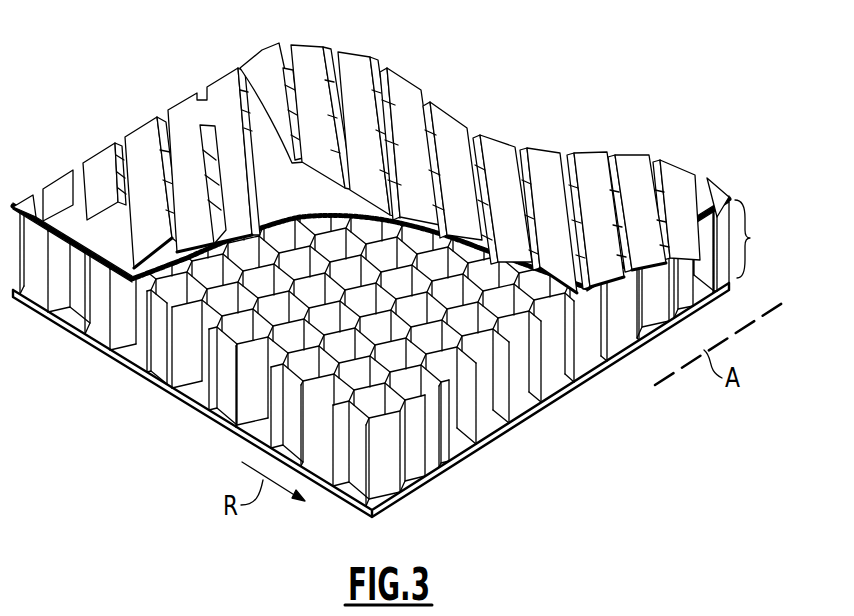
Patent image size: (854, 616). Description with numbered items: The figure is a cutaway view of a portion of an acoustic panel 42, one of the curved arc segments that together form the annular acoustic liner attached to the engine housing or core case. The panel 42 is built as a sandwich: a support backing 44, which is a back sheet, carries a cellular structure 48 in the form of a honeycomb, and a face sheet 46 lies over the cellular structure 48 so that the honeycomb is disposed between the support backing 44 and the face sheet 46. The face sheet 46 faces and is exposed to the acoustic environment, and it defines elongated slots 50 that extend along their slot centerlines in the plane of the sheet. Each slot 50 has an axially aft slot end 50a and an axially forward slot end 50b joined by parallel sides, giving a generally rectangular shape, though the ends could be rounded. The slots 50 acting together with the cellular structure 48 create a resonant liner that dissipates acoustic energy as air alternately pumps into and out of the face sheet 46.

The acoustic panel 42 is at (416, 258).
The support backing 44 is at (514, 424).
The face sheet 46 is at (495, 155).
The cellular structure 48 is at (752, 238).
The elongated slots 50 is at (371, 198).
The axially aft slot end 50a is at (196, 100).
The axially forward slot end 50b is at (240, 68).